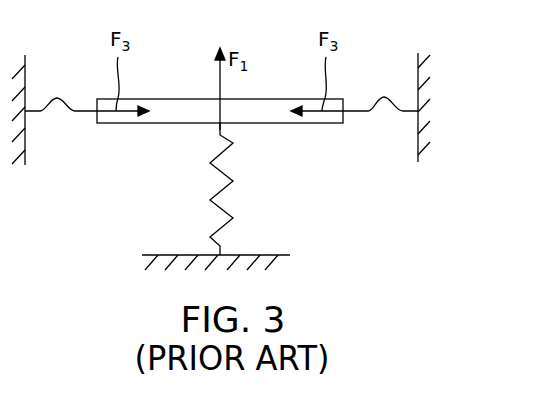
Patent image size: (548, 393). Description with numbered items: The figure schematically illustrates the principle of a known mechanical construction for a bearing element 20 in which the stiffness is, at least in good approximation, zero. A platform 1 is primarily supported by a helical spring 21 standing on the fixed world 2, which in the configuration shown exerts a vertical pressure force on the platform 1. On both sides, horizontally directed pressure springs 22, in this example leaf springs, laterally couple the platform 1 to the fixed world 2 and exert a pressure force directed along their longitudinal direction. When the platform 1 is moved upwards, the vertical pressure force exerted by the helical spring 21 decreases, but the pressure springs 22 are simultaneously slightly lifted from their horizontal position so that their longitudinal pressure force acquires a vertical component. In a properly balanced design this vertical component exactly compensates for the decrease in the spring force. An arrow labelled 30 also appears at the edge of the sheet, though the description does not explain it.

The platform 1 is at (300, 123).
The fixed world 2 is at (25, 143).
The bearing element 20 is at (375, 218).
The helical spring 21 is at (217, 210).
The pressure springs 22 is at (65, 97).
The reference arrow 30 is at (1, 366).